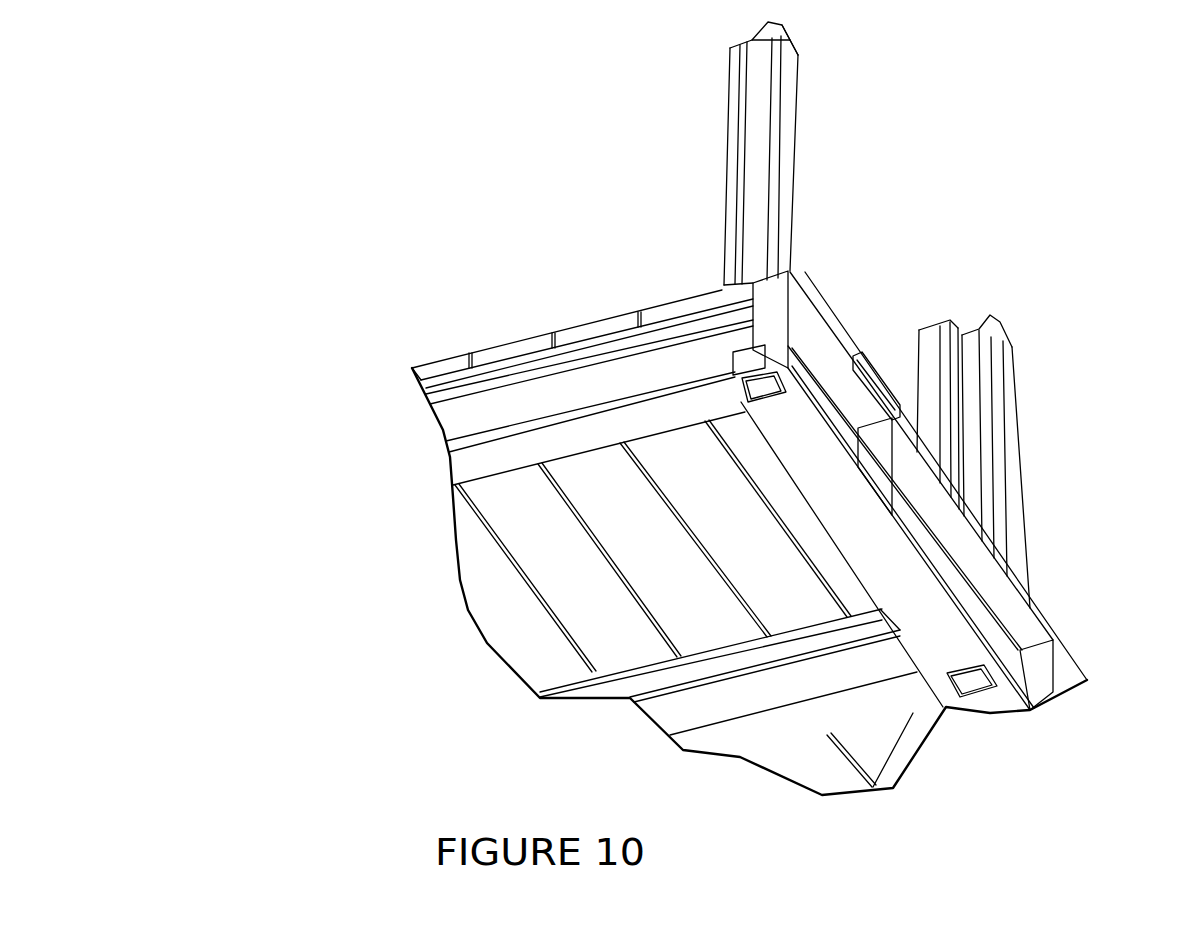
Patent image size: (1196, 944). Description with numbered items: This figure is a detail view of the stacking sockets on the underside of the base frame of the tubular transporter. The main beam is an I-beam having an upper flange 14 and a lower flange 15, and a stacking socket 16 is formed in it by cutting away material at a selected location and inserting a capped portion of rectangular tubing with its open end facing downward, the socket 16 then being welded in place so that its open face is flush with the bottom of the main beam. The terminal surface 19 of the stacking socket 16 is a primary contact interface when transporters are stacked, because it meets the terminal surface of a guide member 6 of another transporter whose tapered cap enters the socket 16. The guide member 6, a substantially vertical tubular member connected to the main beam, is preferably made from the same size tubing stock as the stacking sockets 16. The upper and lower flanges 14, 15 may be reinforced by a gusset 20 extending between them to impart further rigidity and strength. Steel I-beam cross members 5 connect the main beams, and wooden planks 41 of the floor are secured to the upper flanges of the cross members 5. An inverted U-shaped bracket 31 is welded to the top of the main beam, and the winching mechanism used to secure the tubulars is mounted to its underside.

The cross member 5 is at (649, 573).
The guide member 6 is at (673, 153).
The upper flange 14 is at (982, 491).
The lower flange 15 is at (959, 554).
The stacking socket 16 is at (936, 506).
The terminal surface 19 is at (624, 544).
The gusset 20 is at (825, 229).
The inverted U-shaped bracket 31 is at (913, 385).
The plank 41 is at (582, 288).